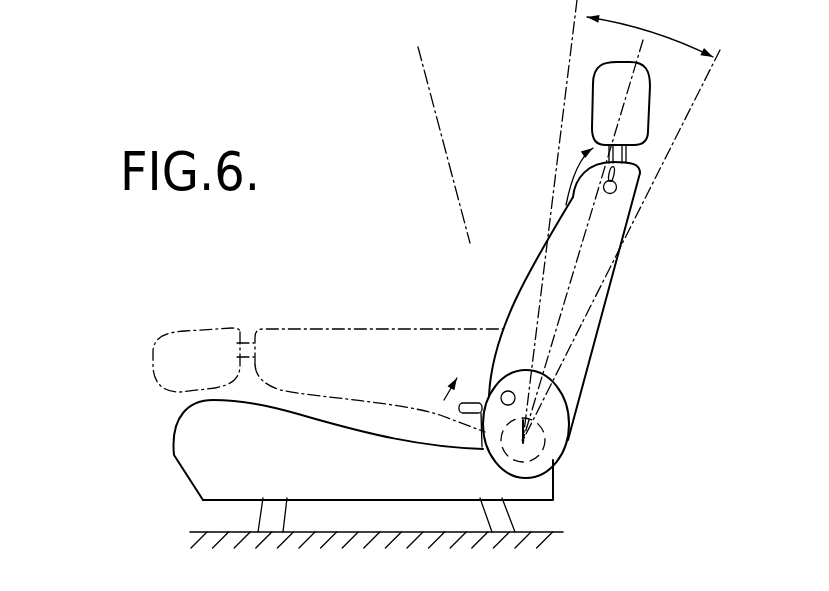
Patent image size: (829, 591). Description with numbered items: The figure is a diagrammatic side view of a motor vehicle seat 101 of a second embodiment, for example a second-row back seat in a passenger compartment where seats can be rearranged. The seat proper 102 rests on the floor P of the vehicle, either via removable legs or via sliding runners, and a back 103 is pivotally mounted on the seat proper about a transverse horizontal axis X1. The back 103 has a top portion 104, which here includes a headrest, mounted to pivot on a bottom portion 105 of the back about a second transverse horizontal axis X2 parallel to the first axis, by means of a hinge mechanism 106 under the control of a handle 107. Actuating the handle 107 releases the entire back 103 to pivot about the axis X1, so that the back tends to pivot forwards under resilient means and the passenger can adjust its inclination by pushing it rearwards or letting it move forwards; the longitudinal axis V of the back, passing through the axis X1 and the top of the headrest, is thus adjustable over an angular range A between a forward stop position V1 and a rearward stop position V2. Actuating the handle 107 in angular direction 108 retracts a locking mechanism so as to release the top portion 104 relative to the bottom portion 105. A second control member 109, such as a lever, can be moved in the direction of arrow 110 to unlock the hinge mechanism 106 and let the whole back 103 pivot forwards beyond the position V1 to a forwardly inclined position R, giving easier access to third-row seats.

The motor vehicle seat 101 is at (458, 267).
The seat proper 102 is at (195, 445).
The back 103 is at (612, 295).
The top portion of the back 104 is at (608, 233).
The bottom portion of the seat back 105 is at (542, 402).
The hinge mechanism 106 is at (537, 434).
The handle 107 is at (470, 411).
The angular direction 108 is at (427, 338).
The second control member 109 is at (617, 188).
The arrow 110 is at (575, 186).
The transverse horizontal axis X1 is at (523, 443).
The second transverse horizontal axis X2 is at (501, 394).
The forward stop position V1 is at (567, 85).
The longitudinal axis of the back V is at (643, 54).
The rearward stop position V2 is at (686, 115).
The forwardly inclined position R is at (423, 85).
The angular range A is at (650, 28).
The floor P is at (553, 530).